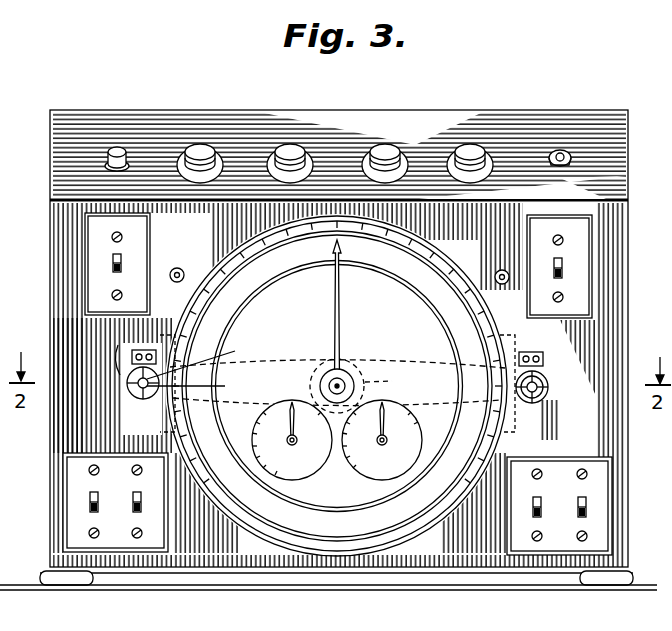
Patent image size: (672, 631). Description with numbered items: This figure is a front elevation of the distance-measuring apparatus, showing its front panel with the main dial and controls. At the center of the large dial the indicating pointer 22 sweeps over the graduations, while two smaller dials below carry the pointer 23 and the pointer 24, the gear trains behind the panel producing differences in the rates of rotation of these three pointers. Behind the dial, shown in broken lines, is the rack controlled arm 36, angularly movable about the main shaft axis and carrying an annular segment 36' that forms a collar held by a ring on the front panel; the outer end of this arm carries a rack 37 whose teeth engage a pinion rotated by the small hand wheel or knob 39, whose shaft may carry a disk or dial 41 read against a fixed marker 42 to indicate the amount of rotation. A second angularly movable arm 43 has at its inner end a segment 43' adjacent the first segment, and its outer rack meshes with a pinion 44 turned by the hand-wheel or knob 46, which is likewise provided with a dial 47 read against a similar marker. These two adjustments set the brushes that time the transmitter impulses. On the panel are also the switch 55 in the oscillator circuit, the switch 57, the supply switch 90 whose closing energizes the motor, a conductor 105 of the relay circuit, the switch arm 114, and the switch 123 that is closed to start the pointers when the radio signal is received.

The indicating pointer 22 is at (338, 333).
The pointer 23 is at (384, 425).
The pointer 24 is at (292, 424).
The rack controlled arm 36 is at (337, 352).
The annular segment 36' is at (336, 388).
The rack 37 is at (508, 350).
The hand wheel or knob 39 is at (546, 397).
The disk or dial 41 is at (548, 380).
The fixed marker 42 is at (543, 362).
The angularly movable arm 43 is at (326, 374).
The segment 43' is at (392, 385).
The pinion 44 is at (126, 343).
The hand-wheel or knob 46 is at (203, 360).
The dial 47 is at (194, 385).
The switch 55 is at (99, 500).
The switch 57 is at (148, 494).
The switch 90 is at (542, 507).
The conductor 105 is at (587, 505).
The switch arm 114 is at (563, 268).
The switch 123 is at (125, 262).